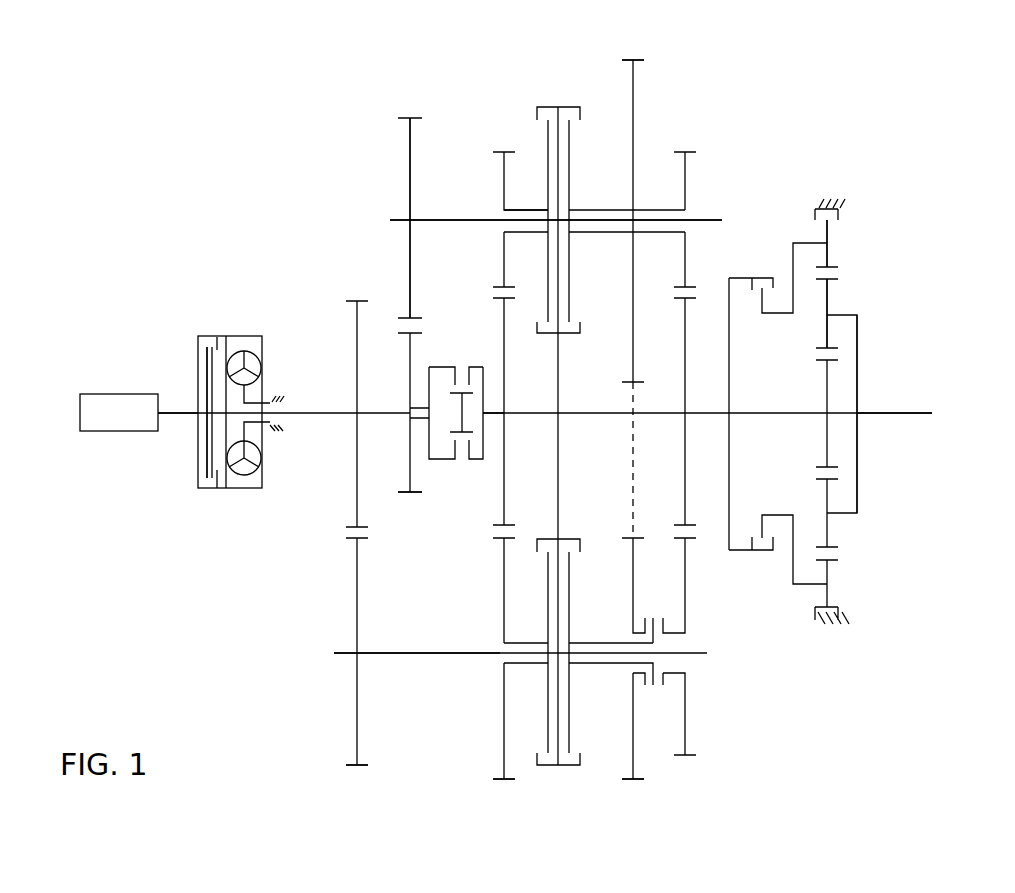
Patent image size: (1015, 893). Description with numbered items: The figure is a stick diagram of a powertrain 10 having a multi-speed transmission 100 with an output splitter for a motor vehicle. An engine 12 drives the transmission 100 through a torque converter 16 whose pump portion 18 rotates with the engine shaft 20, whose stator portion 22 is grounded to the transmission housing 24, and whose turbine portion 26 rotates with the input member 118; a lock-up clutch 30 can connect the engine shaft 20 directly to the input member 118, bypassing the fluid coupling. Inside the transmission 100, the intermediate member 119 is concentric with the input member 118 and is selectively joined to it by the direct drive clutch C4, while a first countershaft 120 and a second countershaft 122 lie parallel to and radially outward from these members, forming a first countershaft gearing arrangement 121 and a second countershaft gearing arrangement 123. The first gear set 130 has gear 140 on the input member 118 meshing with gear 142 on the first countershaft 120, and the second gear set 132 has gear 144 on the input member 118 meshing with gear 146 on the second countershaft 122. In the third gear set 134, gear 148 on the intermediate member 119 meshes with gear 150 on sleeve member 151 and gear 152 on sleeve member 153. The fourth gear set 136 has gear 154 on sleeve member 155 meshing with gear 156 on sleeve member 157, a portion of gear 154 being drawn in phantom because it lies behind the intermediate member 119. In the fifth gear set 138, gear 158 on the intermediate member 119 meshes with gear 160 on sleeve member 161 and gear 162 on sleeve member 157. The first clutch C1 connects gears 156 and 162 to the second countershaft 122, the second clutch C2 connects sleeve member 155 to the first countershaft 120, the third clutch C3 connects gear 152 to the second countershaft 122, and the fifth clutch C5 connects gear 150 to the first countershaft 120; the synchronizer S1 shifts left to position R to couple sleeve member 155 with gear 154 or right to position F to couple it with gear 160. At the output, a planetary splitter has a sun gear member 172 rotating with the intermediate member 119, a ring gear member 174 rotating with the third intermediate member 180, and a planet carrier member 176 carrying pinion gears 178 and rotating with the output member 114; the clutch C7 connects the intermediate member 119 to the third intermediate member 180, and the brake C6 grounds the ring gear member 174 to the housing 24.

The powertrain 10 is at (168, 150).
The engine 12 is at (121, 394).
The torque converter 16 is at (245, 367).
The pump portion 18 is at (261, 368).
The engine shaft 20 is at (179, 415).
The stator portion 22 is at (248, 378).
The transmission housing 24 is at (283, 431).
The turbine portion 26 is at (240, 353).
The lock-up clutch 30 is at (198, 348).
The multi-speed transmission 100 is at (821, 88).
The output member 114 is at (908, 413).
The input member 118 is at (375, 413).
The intermediate member 119 is at (562, 415).
The first countershaft 120 is at (338, 657).
The first countershaft gearing arrangement 121 is at (319, 652).
The second countershaft 122 is at (395, 222).
The second countershaft gearing arrangement 123 is at (377, 220).
The first gear set 130 is at (357, 778).
The second gear set 132 is at (410, 110).
The third gear set 134 is at (504, 792).
The fourth gear set 136 is at (633, 52).
The fifth gear set 138 is at (633, 792).
The gear 140 is at (357, 495).
The gear 142 is at (357, 607).
The gear 144 is at (412, 480).
The gear 146 is at (410, 262).
The gear 148 is at (505, 388).
The gear 150 is at (504, 712).
The sleeve member 151 is at (520, 642).
The gear 152 is at (502, 183).
The sleeve member 153 is at (522, 210).
The gear 154 is at (633, 734).
The sleeve member 155 is at (592, 642).
The gear 156 is at (633, 297).
The sleeve member 157 is at (596, 210).
The gear 158 is at (685, 483).
The gear 160 is at (684, 718).
The sleeve member 161 is at (669, 679).
The gear 162 is at (685, 200).
The sun gear member 172 is at (827, 387).
The ring gear member 174 is at (828, 249).
The planet carrier member 176 is at (903, 323).
The pinion gears 178 is at (828, 301).
The third intermediate member 180 is at (778, 315).
The first clutch C1 is at (581, 425).
The second clutch C2 is at (583, 785).
The third clutch C3 is at (548, 209).
The direct drive clutch C4 is at (466, 401).
The fifth clutch C5 is at (551, 666).
The brake C6 is at (821, 408).
The clutch C7 is at (751, 404).
The synchronizer S1 is at (716, 623).
The position R is at (645, 588).
The position F is at (669, 588).